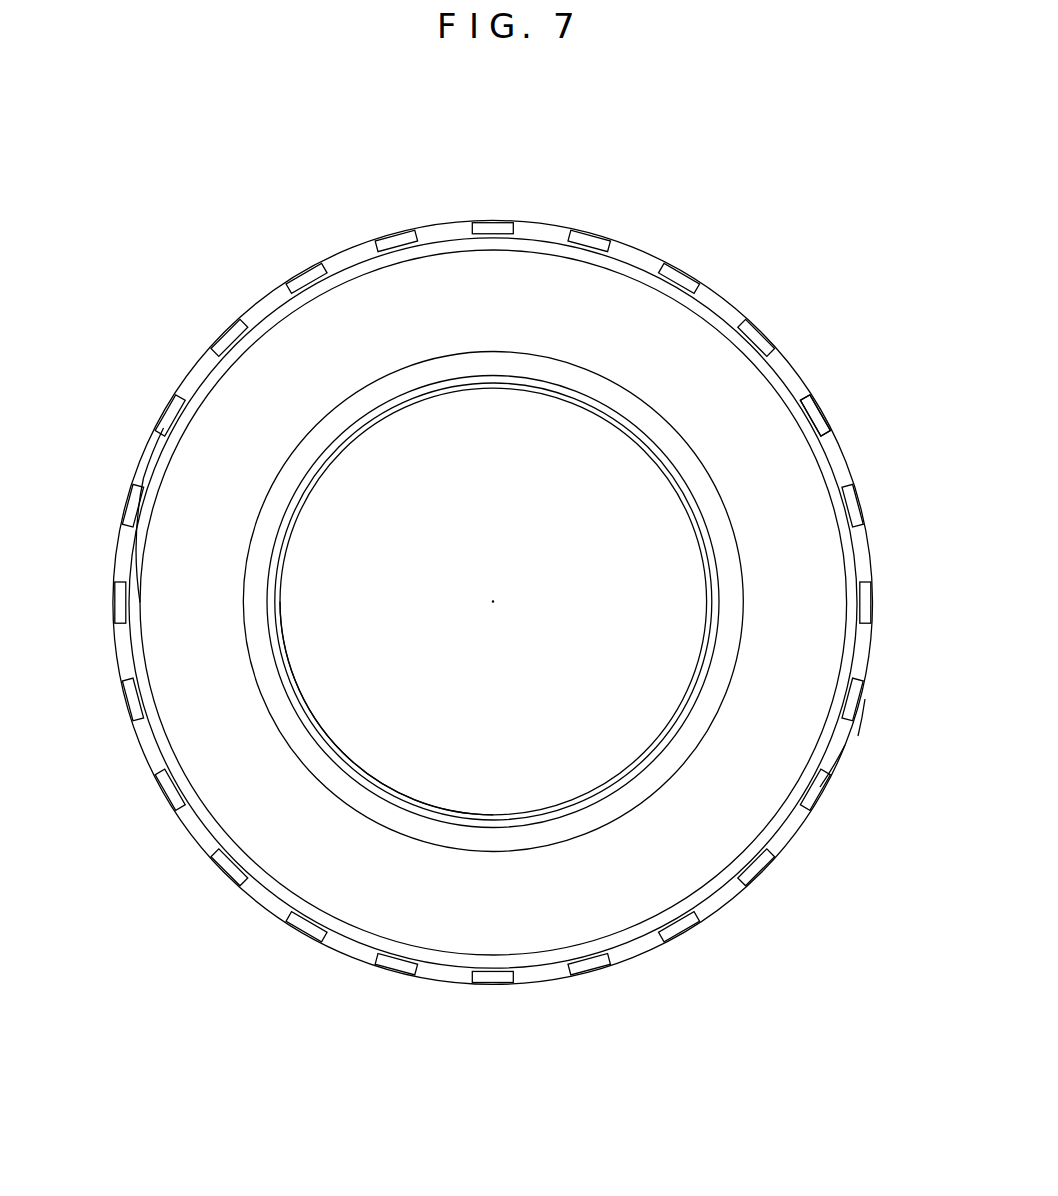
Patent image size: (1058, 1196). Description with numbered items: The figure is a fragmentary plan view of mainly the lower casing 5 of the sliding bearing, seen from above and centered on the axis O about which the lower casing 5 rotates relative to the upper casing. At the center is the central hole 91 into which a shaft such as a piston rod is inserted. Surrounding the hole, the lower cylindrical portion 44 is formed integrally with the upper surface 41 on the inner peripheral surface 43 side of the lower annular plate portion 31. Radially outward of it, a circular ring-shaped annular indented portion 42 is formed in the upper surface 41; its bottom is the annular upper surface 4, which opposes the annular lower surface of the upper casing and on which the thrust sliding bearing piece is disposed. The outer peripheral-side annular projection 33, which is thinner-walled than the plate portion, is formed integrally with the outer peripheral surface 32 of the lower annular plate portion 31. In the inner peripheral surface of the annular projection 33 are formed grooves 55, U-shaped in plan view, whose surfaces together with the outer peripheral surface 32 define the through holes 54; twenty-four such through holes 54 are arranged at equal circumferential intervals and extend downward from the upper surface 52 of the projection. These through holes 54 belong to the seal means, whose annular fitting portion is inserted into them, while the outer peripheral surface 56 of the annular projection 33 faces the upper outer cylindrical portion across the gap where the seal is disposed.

The annular upper surface 4 is at (183, 477).
The lower casing 5 is at (285, 277).
The lower annular plate portion 31 is at (282, 490).
The outer peripheral surface 32 is at (808, 802).
The outer peripheral-side annular projection 33 is at (842, 460).
The upper surface 41 is at (318, 443).
The annular indented portion 42 is at (153, 565).
The inner peripheral surface 43 is at (288, 538).
The lower cylindrical portion 44 is at (273, 580).
The upper surface 52 is at (863, 650).
The through holes 54 is at (493, 232).
The grooves 55 is at (820, 783).
The outer peripheral surface 56 is at (865, 697).
The central hole 91 is at (500, 692).
The axis O is at (491, 603).